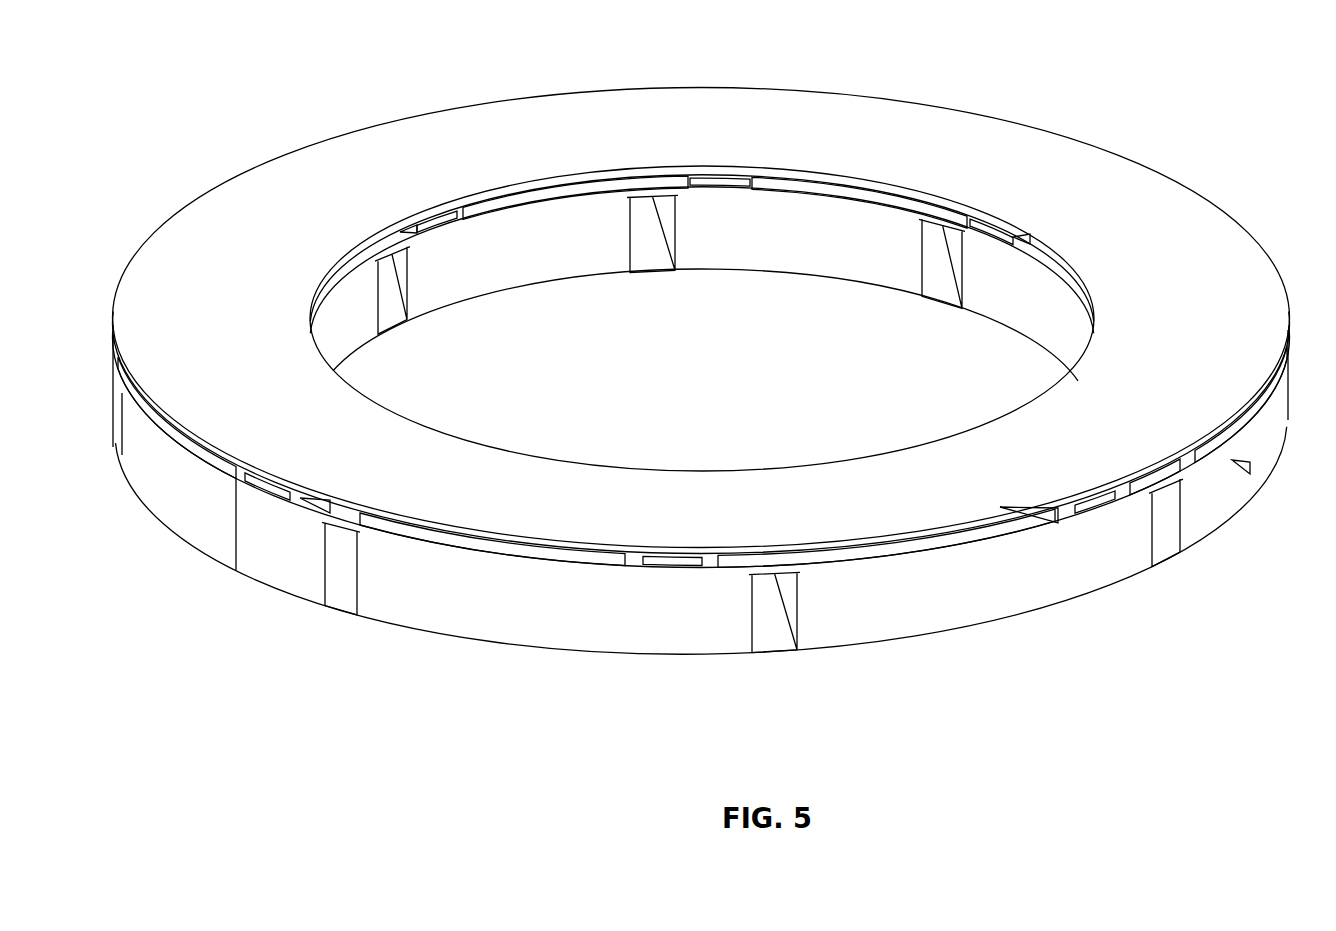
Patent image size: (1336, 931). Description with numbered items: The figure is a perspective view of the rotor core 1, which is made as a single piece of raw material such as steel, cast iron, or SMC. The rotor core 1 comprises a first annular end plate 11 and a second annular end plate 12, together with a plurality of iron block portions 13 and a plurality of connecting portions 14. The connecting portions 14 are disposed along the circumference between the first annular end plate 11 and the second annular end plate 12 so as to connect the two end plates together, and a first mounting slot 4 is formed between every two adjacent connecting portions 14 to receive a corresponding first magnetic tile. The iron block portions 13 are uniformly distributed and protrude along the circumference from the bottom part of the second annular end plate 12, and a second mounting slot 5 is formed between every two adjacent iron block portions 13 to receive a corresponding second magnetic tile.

The rotor core 1 is at (1102, 97).
The first annular end plate 11 is at (388, 465).
The second annular end plate 12 is at (340, 528).
The first mounting slot 4 is at (427, 540).
The second mounting slot 5 is at (337, 578).
The iron block portion 13 is at (272, 557).
The connecting portion 14 is at (238, 487).